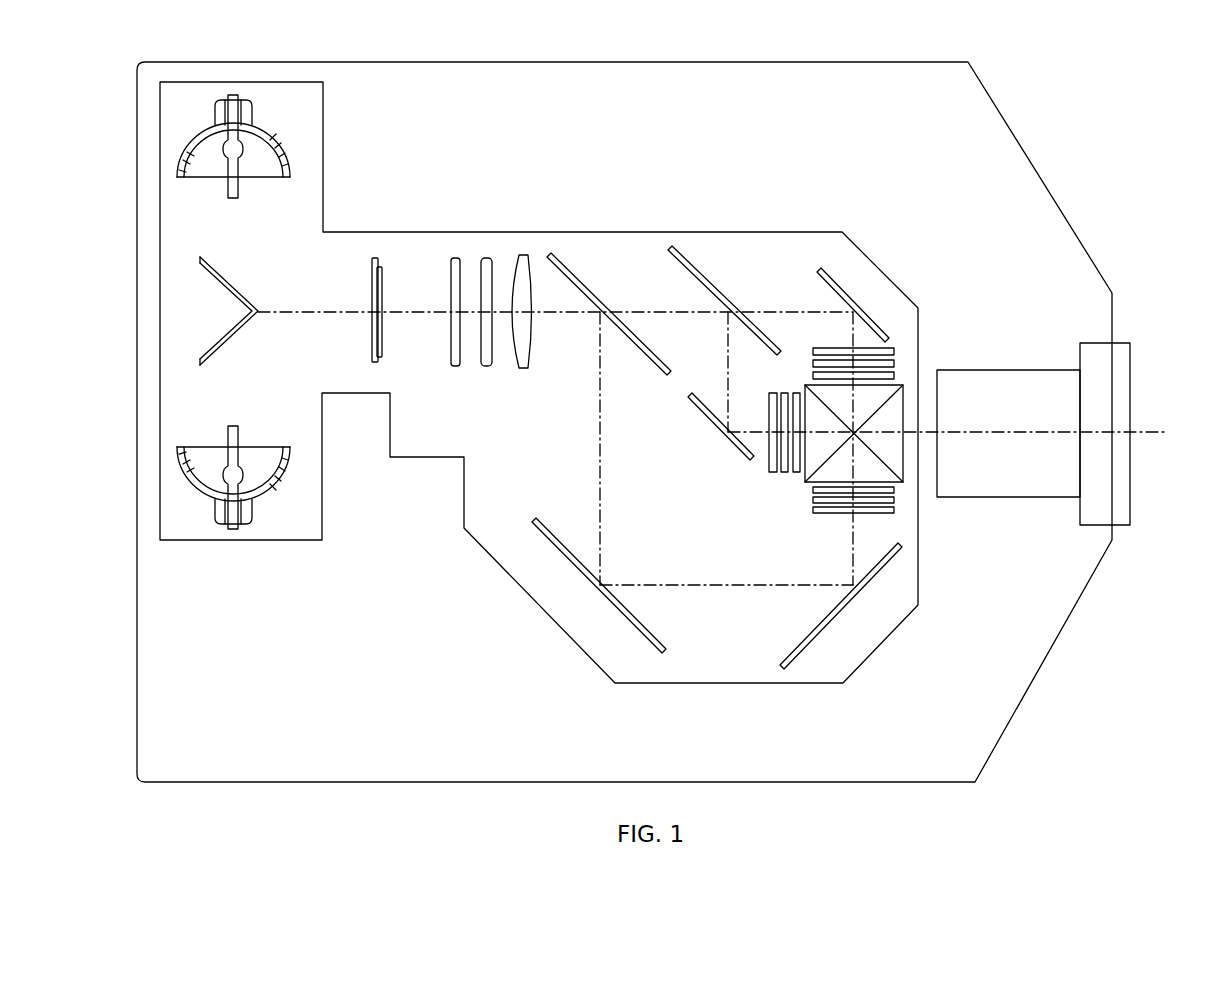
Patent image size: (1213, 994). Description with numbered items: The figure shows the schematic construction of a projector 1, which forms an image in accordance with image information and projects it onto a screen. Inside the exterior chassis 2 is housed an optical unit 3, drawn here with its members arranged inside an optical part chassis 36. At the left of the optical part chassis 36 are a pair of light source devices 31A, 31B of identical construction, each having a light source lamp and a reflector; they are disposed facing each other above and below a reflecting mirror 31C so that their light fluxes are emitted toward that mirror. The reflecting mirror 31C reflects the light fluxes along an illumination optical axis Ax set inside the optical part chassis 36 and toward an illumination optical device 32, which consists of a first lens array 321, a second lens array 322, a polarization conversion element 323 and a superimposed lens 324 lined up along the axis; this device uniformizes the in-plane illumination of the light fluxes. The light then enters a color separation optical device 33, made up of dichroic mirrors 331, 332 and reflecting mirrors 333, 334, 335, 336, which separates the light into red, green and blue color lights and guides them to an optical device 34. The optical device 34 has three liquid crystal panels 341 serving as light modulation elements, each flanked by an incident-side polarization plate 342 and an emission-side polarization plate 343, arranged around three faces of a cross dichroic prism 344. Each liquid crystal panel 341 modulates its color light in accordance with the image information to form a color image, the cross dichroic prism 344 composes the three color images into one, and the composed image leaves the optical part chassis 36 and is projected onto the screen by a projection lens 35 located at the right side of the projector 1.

The projector 1 is at (1172, 163).
The exterior chassis 2 is at (1007, 117).
The optical unit 3 is at (735, 158).
The light source device 31A is at (316, 485).
The light source device 31B is at (321, 141).
The reflecting mirror 31C is at (222, 355).
The illumination optical device 32 is at (360, 172).
The lens array 321 is at (378, 258).
The lens array 322 is at (455, 258).
The polarization conversion element 323 is at (488, 258).
The superimposed lens 324 is at (524, 255).
The color separation optical device 33 is at (820, 255).
The dichroic mirror 331 is at (573, 282).
The dichroic mirror 332 is at (705, 286).
The reflecting mirror 333 is at (541, 522).
The reflecting mirror 334 is at (826, 618).
The reflecting mirror 335 is at (697, 407).
The reflecting mirror 336 is at (835, 290).
The optical device 34 is at (903, 327).
The liquid crystal panel 341 is at (894, 362).
The incident-side polarization plate 342 is at (773, 392).
The emission-side polarization plate 343 is at (895, 375).
The cross dichroic prism 344 is at (892, 418).
The projection lens 35 is at (1062, 370).
The optical part chassis 36 is at (710, 684).
The illumination optical axis Ax is at (563, 314).